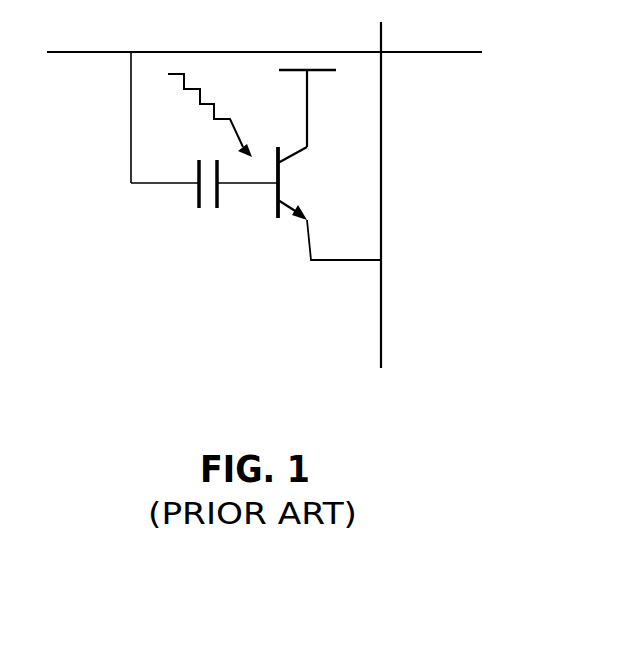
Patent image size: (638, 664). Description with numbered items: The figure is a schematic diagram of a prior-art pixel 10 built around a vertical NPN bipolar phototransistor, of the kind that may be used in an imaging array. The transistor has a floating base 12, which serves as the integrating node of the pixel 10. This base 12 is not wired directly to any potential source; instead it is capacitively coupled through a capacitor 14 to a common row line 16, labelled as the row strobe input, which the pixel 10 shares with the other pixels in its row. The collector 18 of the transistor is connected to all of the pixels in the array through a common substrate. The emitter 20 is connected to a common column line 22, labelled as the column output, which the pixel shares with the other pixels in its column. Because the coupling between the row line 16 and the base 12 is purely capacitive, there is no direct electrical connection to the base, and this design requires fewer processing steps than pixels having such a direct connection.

The pixel 10 is at (126, 310).
The floating base 12 is at (270, 185).
The capacitor 14 is at (197, 187).
The common row line 16 is at (347, 52).
The collector 18 is at (307, 100).
The emitter 20 is at (312, 247).
The common column line 22 is at (381, 352).